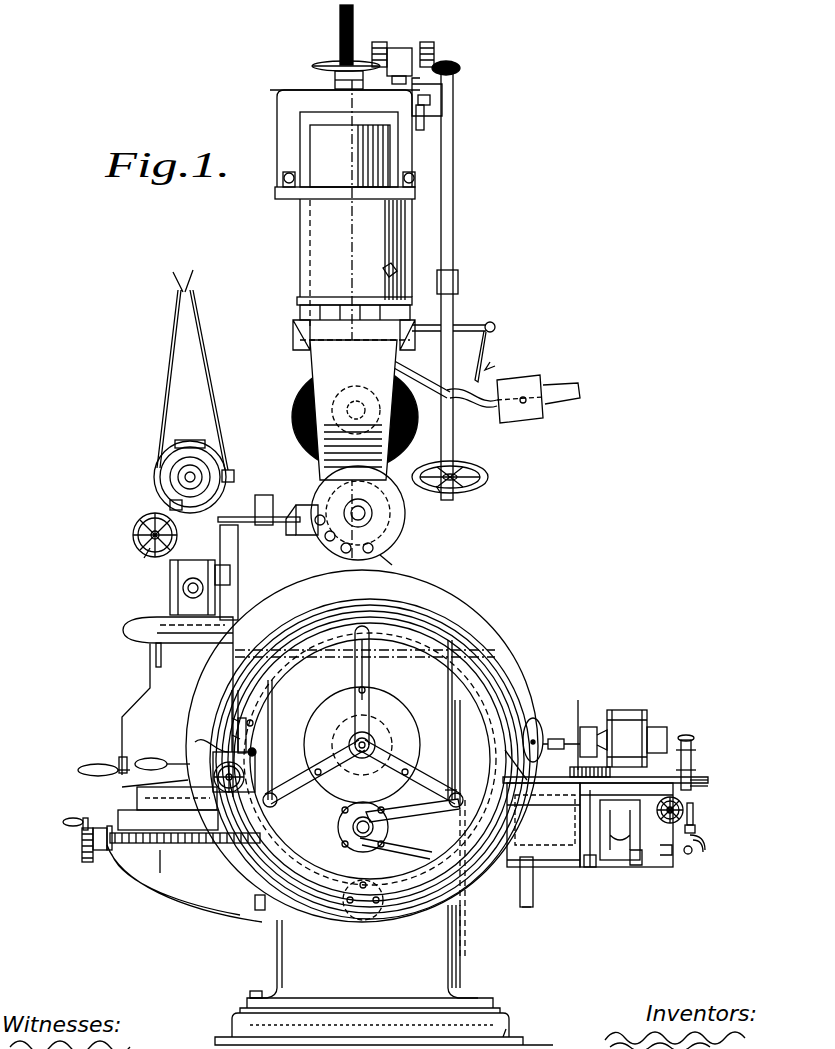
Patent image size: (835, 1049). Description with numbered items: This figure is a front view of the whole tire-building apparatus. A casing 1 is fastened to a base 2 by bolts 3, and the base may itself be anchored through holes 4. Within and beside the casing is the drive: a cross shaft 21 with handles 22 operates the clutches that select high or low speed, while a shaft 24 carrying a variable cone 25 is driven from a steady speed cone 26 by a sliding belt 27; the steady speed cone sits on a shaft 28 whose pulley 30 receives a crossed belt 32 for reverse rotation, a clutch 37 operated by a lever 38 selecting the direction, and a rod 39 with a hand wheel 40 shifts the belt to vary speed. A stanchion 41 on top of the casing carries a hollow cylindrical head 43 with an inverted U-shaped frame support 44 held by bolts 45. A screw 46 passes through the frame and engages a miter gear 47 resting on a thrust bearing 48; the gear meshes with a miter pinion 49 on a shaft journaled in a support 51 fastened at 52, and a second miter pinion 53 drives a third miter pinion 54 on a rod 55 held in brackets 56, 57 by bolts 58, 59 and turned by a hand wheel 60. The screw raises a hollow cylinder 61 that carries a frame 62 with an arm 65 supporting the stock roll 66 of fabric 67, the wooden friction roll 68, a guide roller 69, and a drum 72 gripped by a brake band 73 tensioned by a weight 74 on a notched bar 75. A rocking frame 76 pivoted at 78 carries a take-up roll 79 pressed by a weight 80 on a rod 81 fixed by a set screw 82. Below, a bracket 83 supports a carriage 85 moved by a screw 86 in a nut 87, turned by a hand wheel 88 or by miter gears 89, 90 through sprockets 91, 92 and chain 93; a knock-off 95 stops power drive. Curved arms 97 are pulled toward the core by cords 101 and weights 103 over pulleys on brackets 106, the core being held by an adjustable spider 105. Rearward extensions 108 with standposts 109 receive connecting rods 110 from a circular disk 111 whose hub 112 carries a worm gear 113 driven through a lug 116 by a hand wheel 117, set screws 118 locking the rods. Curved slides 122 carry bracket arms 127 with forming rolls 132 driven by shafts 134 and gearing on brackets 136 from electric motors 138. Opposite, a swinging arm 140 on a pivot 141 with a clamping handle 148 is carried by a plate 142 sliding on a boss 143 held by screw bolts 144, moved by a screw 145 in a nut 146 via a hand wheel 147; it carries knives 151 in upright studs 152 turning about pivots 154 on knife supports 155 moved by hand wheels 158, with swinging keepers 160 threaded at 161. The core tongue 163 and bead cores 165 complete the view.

The casing 1 is at (364, 951).
The base 2 is at (384, 1021).
The bolts 3 is at (256, 991).
The holes 4 is at (516, 1012).
The cross shaft 21 is at (167, 662).
The handles 22 is at (148, 698).
The shaft 24 is at (170, 588).
The variable cone 25 is at (230, 578).
The steady speed cone 26 is at (206, 456).
The sliding belt 27 is at (170, 504).
The shaft 28 is at (234, 475).
The pulley 30 is at (160, 460).
The crossed belt 32 is at (174, 335).
The clutch 37 is at (178, 477).
The lever 38 is at (238, 557).
The rod 39 is at (133, 534).
The hand wheel 40 is at (150, 547).
The stanchion 41 is at (302, 535).
The hollow cylindrical head 43 is at (316, 243).
The frame support 44 is at (288, 117).
The bolts 45 is at (415, 178).
The screw 46 is at (340, 14).
The miter gear 47 is at (336, 62).
The thrust bearing 48 is at (335, 80).
The miter pinion 49 is at (378, 42).
The support 51 is at (400, 48).
The bolts 52 is at (429, 124).
The second miter pinion 53 is at (430, 42).
The third miter pinion 54 is at (452, 63).
The rod 55 is at (453, 232).
The bracket 56 is at (445, 85).
The bracket 57 is at (458, 280).
The bolts 58 is at (430, 100).
The bolts 59 is at (392, 272).
The hand wheel 60 is at (490, 477).
The hollow cylinder 61 is at (320, 153).
The frame 62 is at (293, 331).
The arm 65 is at (373, 515).
The stock roll 66 is at (340, 400).
The fabric 67 is at (426, 436).
The friction roll 68 is at (404, 540).
The guide roller 69 is at (373, 548).
The drum 72 is at (394, 562).
The brake band 73 is at (438, 492).
The weight 74 is at (265, 496).
The notched bar 75 is at (266, 523).
The rocking frame 76 is at (490, 404).
The pivot 78 is at (372, 353).
The take-up roll 79 is at (480, 348).
The weight 80 is at (530, 384).
The rod 81 is at (572, 398).
The set screw 82 is at (524, 404).
The bracket 83 is at (660, 867).
The carriage 85 is at (612, 860).
The screw 86 is at (673, 856).
The nut 87 is at (640, 866).
The hand wheel 88 is at (692, 850).
The miter gear 89 is at (497, 893).
The miter gear 90 is at (520, 880).
The sprocket 91 is at (340, 824).
The sprocket 92 is at (450, 826).
The chain 93 is at (414, 812).
The knock-off 95 is at (472, 773).
The curved arms 97 is at (512, 758).
The cords 101 is at (524, 826).
The weights 103 is at (525, 908).
The adjustable spider 105 is at (369, 667).
The brackets 106 is at (590, 868).
The rearward extension 108 is at (692, 770).
The standposts 109 is at (692, 750).
The connecting rods 110 is at (708, 780).
The circular disk 111 is at (710, 786).
The hub 112 is at (694, 815).
The worm gear 113 is at (695, 826).
The lug 116 is at (684, 808).
The hand wheel 117 is at (706, 848).
The set screws 118 is at (686, 735).
The curved slides 122 is at (612, 775).
The bracket arms 127 is at (558, 738).
The forming rolls 132 is at (537, 722).
The shafts 134 is at (578, 702).
The brackets 136 is at (590, 727).
The electric motors 138 is at (627, 710).
The swinging arm 140 is at (137, 800).
The pivot 141 is at (155, 759).
The plate 142 is at (196, 843).
The boss 143 is at (184, 883).
The screw bolts 144 is at (258, 912).
The screw 145 is at (102, 851).
The nut 146 is at (160, 875).
The hand wheel 147 is at (82, 848).
The clamping handle 148 is at (122, 764).
The knives 151 is at (236, 720).
The upright studs 152 is at (258, 733).
The pivots 154 is at (256, 751).
The knife supports 155 is at (254, 724).
The hand wheels 158 is at (245, 775).
The swinging keepers 160 is at (210, 748).
The screw thread 161 is at (236, 737).
The tongue 163 is at (452, 640).
The bead cores 165 is at (467, 662).